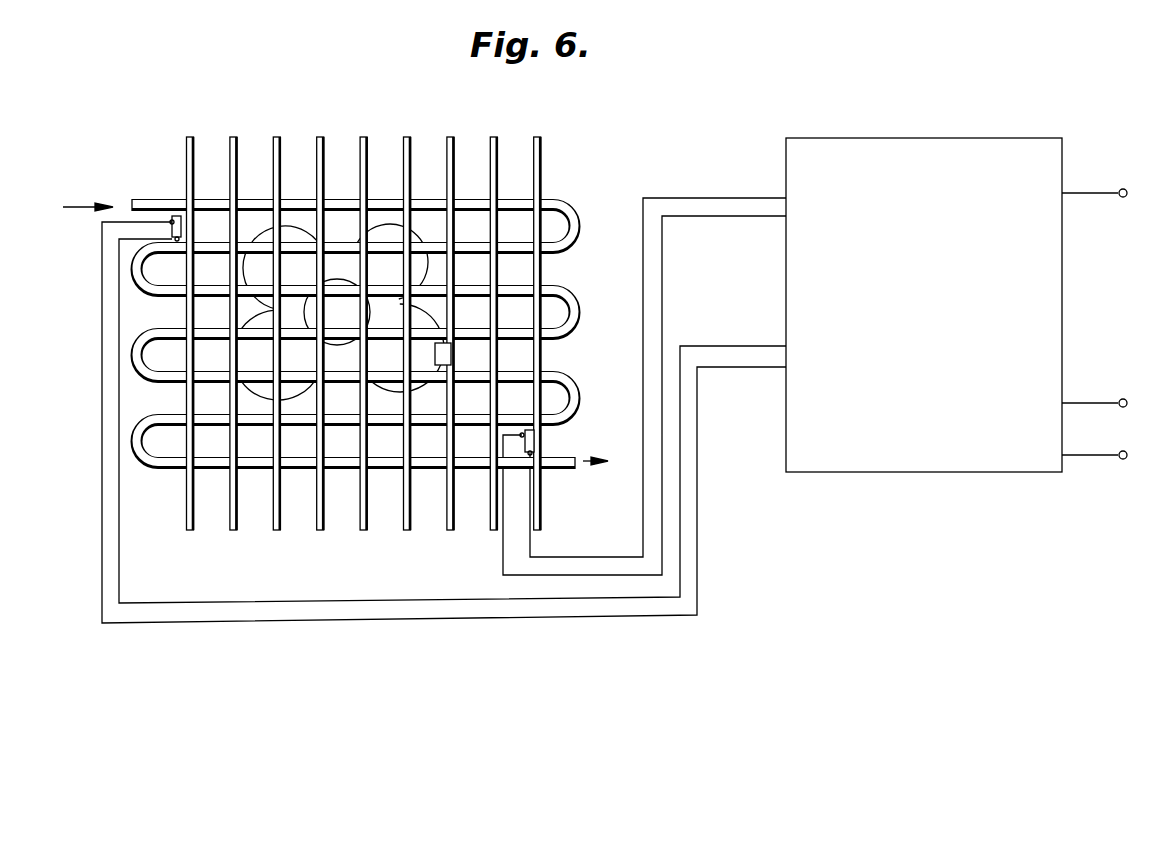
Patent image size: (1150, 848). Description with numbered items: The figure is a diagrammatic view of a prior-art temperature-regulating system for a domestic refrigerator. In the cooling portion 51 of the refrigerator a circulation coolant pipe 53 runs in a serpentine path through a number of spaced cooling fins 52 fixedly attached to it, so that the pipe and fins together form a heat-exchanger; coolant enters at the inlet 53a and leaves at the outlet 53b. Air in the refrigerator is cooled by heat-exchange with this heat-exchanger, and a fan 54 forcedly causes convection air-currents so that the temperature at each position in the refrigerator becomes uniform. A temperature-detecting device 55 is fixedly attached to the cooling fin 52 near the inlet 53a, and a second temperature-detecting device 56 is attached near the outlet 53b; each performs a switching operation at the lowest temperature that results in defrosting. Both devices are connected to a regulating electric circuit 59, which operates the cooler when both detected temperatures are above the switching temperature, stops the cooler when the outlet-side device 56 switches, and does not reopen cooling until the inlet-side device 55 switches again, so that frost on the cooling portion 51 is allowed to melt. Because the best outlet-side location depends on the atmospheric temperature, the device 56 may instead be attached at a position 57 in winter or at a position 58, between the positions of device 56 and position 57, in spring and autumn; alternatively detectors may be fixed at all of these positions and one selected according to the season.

The cooling portion 51 is at (348, 245).
The cooling fins 52 is at (275, 150).
The circulation coolant pipe 53 is at (337, 366).
The inlet 53a is at (136, 200).
The outlet 53b is at (571, 470).
The fan 54 is at (342, 270).
The temperature-detecting device 55 is at (178, 214).
The temperature-detecting device 56 is at (534, 437).
The position 57 is at (355, 312).
The position 58 is at (451, 353).
The regulating electric circuit 59 is at (940, 350).